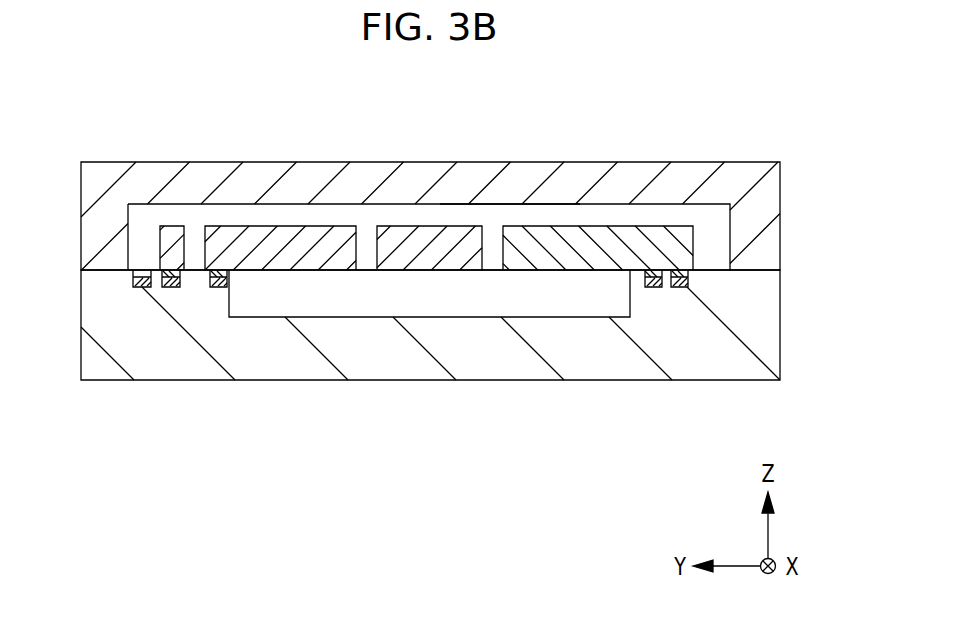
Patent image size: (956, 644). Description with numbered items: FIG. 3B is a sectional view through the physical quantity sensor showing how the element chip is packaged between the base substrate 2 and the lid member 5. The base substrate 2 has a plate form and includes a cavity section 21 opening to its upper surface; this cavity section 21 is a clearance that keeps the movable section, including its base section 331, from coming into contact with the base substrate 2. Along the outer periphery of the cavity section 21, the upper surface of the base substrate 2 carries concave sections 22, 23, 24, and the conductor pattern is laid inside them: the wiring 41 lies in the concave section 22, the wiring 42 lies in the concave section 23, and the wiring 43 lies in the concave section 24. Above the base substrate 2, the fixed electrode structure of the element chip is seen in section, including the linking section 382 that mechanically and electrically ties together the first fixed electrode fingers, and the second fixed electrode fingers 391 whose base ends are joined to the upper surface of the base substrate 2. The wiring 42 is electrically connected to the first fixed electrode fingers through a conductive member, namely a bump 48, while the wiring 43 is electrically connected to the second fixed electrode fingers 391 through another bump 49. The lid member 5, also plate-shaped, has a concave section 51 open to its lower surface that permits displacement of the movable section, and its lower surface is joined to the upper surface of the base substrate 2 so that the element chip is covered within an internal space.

The base substrate 2 is at (742, 362).
The lid member 5 is at (685, 178).
The cavity section 21 is at (453, 300).
The concave section 22 is at (140, 284).
The concave section 23 is at (172, 287).
The concave section 24 is at (215, 288).
The wiring 41 is at (142, 287).
The wiring 42 is at (181, 288).
The wiring 43 is at (228, 279).
The conductive member 48 is at (176, 277).
The conductive member 49 is at (228, 274).
The concave section 51 is at (503, 205).
The base section 331 is at (433, 250).
The linking section 382 is at (172, 247).
The second fixed electrode fingers 391 is at (287, 247).